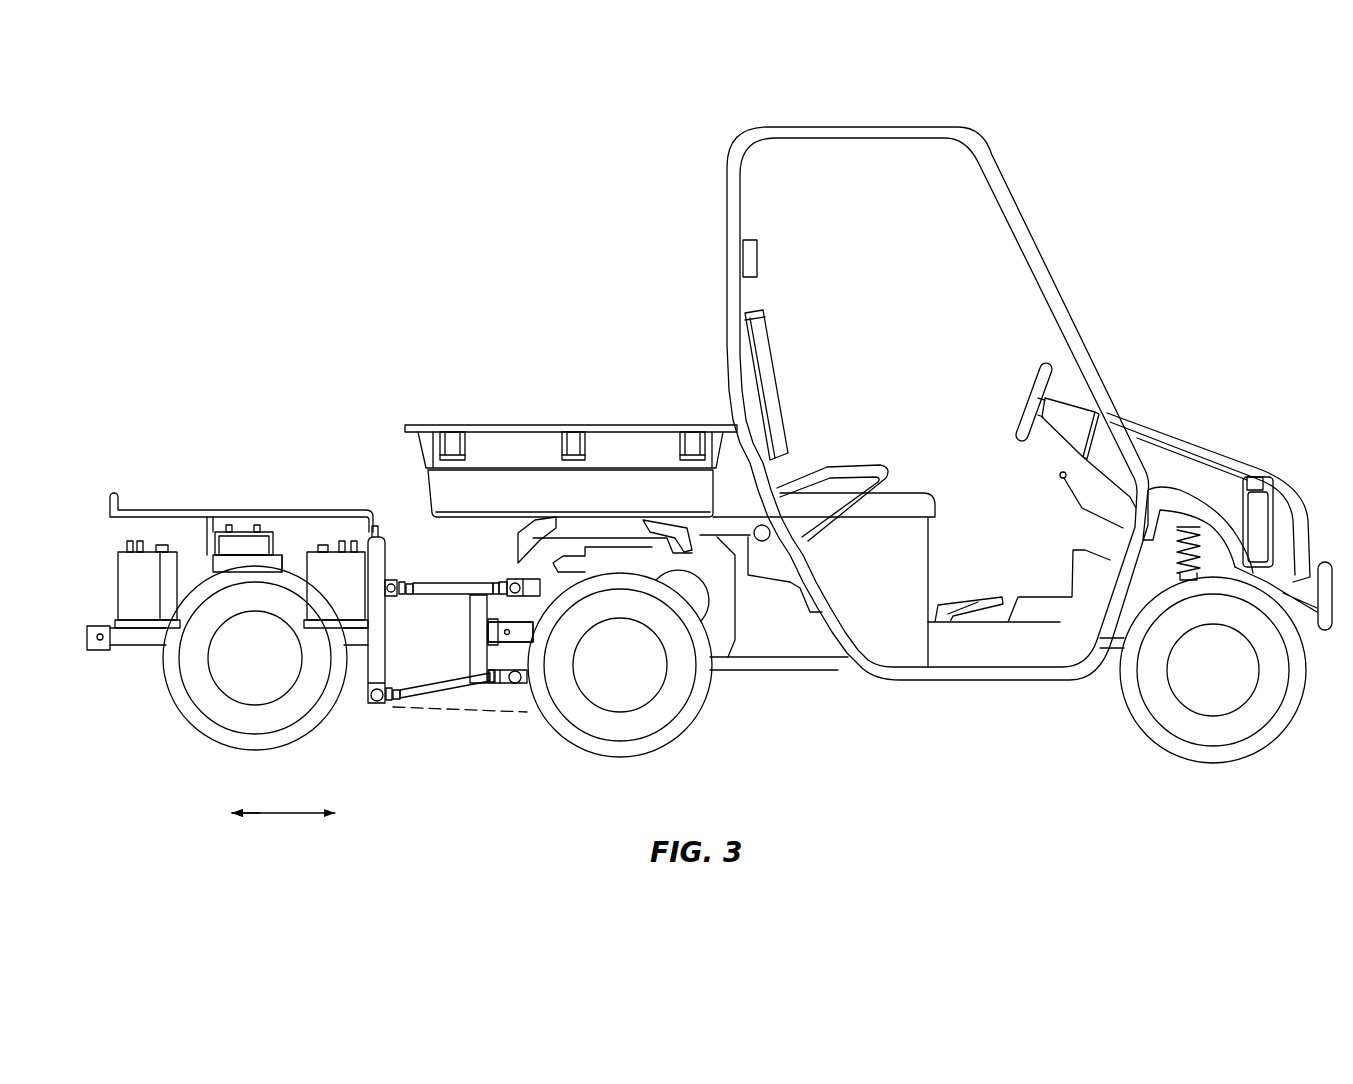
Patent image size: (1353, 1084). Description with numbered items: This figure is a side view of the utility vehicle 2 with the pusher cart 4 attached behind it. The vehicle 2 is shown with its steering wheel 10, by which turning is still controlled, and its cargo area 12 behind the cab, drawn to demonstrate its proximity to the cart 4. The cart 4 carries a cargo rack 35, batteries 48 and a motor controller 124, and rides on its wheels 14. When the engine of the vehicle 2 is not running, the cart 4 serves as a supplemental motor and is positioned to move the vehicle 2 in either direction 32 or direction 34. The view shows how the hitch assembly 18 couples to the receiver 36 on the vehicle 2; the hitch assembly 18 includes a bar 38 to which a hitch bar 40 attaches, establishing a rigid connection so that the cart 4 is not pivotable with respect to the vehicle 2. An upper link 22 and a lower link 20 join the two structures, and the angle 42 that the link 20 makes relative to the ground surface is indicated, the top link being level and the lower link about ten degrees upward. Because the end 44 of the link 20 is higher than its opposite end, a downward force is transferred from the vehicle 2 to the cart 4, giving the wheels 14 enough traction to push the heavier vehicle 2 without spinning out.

The utility vehicle 2 is at (1019, 117).
The pusher cart 4 is at (136, 428).
The steering wheel 10 is at (1033, 375).
The cargo area 12 is at (565, 406).
The wheel 14 is at (167, 692).
The hitch assembly 18 is at (430, 730).
The link 20 is at (403, 688).
The upper link 22 is at (430, 582).
The direction 32 is at (332, 810).
The direction 34 is at (236, 816).
The cargo rack 35 is at (157, 508).
The receiver 36 is at (519, 620).
The bar 38 is at (470, 610).
The hitch bar 40 is at (482, 635).
The angle 42 is at (494, 697).
The end 44 is at (497, 670).
The batteries 48 is at (118, 585).
The motor controller 124 is at (243, 540).